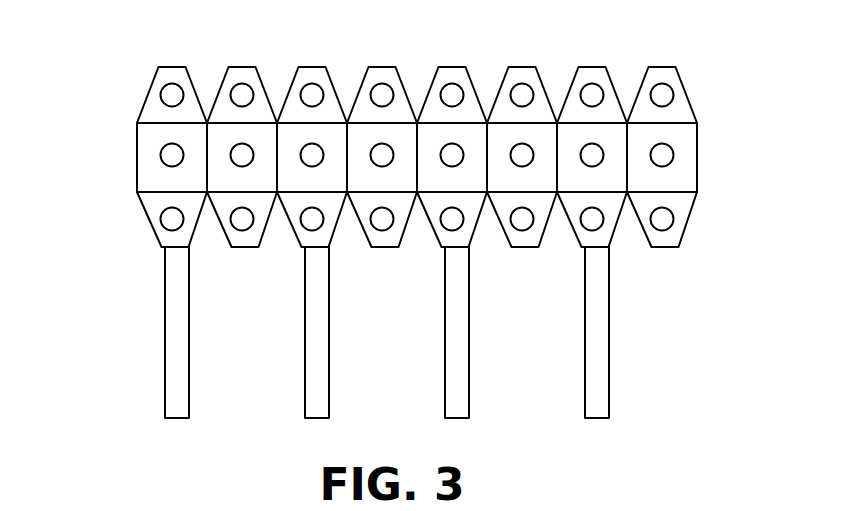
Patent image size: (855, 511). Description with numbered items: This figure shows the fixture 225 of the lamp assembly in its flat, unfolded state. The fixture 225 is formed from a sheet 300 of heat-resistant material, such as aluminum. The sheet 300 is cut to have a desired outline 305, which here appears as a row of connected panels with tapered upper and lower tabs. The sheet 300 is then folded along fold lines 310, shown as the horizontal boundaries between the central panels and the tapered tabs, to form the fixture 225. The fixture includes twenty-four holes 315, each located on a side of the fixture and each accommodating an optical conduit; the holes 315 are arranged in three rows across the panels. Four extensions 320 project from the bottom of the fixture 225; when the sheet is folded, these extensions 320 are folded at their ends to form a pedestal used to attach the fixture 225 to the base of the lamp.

The fixture 225 is at (738, 112).
The sheet 300 is at (148, 102).
The outline 305 is at (695, 205).
The fold lines 310 is at (207, 144).
The holes 315 is at (242, 95).
The extensions 320 is at (177, 395).